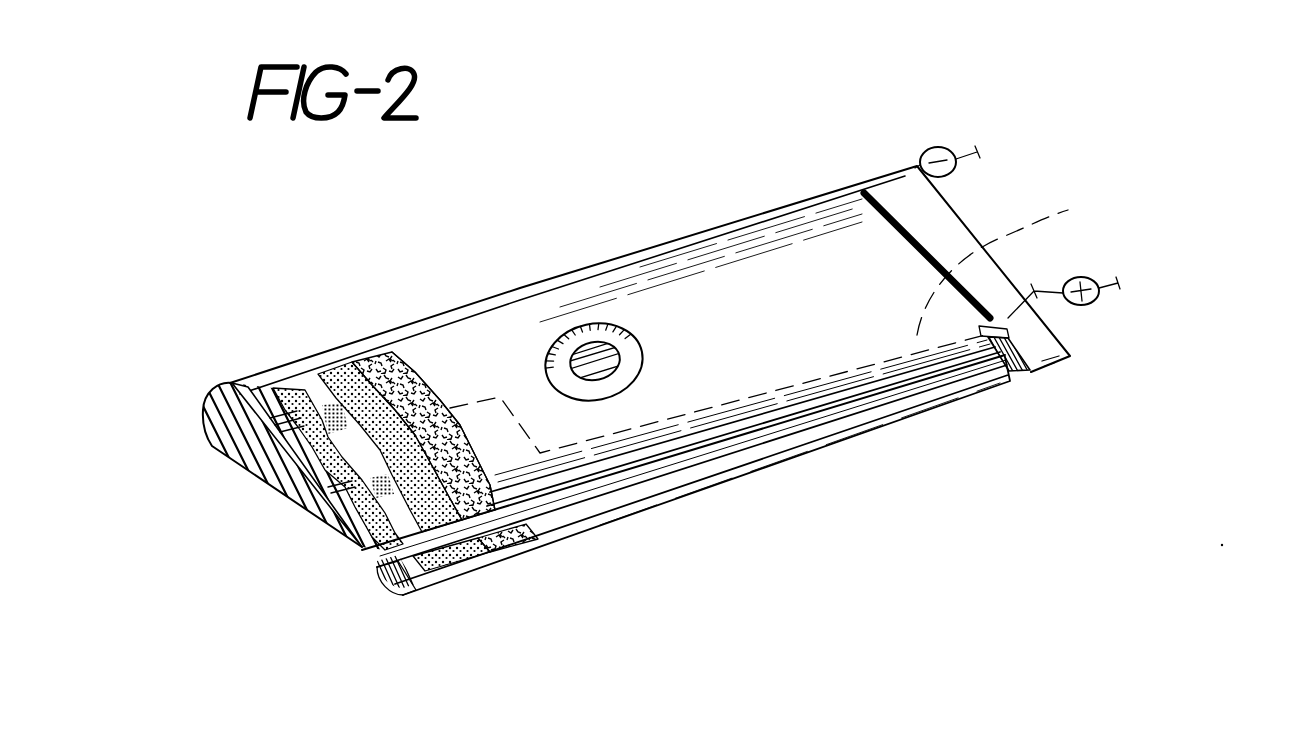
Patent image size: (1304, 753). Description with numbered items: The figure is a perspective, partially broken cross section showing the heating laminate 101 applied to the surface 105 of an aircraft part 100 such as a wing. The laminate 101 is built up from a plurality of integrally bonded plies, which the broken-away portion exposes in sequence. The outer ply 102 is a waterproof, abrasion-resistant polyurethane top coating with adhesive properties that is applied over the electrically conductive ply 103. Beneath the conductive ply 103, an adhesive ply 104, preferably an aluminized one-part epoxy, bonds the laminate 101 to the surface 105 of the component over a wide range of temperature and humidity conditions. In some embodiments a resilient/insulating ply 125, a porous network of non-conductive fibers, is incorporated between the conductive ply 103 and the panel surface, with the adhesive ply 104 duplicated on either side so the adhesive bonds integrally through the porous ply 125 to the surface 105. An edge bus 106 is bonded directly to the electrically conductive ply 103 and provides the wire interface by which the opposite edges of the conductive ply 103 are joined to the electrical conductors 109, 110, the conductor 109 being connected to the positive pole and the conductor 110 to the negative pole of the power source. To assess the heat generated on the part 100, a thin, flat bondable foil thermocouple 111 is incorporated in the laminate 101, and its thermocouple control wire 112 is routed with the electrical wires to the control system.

The aircraft part 100 is at (1088, 372).
The laminate 101 is at (465, 355).
The outer ply 102 is at (425, 355).
The electrically conductive ply 103 is at (358, 360).
The adhesive ply 104 is at (256, 381).
The surface of the aircraft component 105 is at (236, 383).
The edge bus 106 is at (905, 233).
The electrical conductor 109 is at (1062, 305).
The electrical conductor 110 is at (912, 170).
The bondable foil thermocouple 111 is at (432, 412).
The thermocouple control wire 112 is at (1022, 265).
The resilient/insulating ply 125 is at (300, 383).